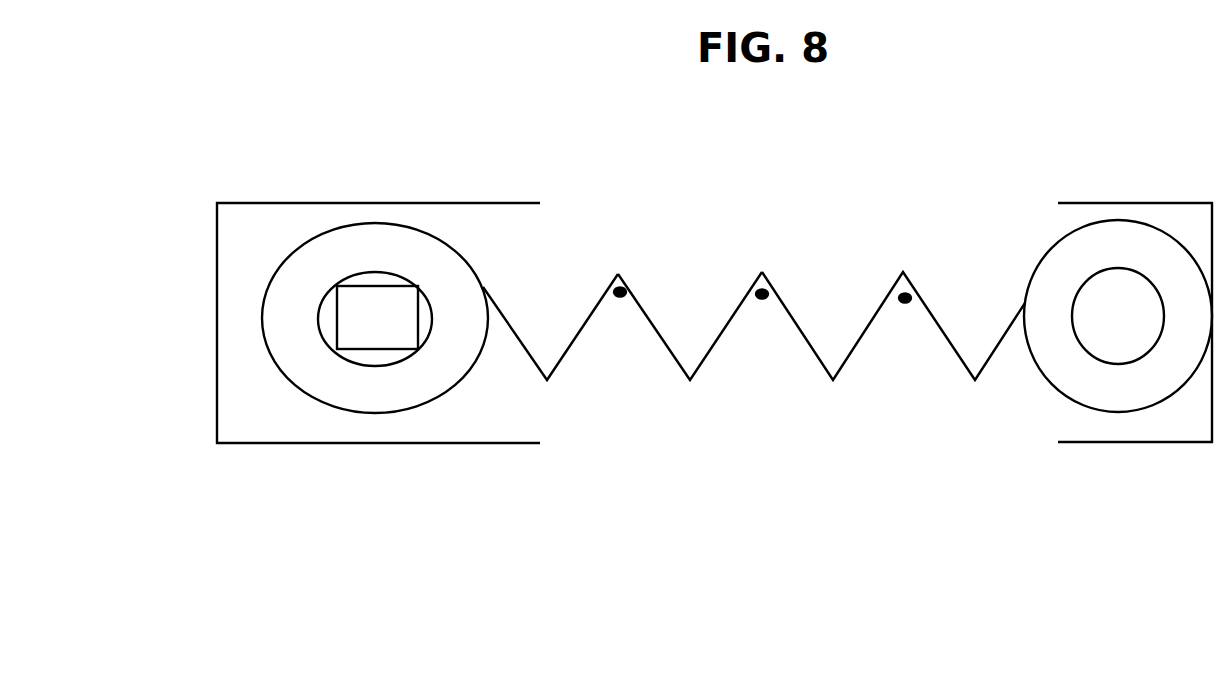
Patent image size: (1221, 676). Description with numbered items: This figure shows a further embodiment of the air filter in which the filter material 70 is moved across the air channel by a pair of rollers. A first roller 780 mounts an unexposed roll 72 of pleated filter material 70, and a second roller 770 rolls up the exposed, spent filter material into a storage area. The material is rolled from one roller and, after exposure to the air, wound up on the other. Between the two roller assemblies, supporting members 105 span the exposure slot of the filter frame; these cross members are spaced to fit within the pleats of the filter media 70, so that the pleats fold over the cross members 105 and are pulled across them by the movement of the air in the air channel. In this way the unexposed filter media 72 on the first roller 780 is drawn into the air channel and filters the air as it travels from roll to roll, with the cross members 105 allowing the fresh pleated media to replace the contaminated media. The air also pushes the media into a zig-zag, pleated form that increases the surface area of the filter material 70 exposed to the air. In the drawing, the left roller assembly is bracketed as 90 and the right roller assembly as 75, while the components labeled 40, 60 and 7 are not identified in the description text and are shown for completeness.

The first connector assembly 90 is at (220, 469).
The first roller 780 is at (333, 290).
The inner ring 40 is at (370, 277).
The insert 60 is at (348, 300).
The spring wire 7 is at (675, 212).
The filter material 70 is at (703, 297).
The supporting members 105 is at (905, 298).
The second connector assembly 75 is at (1213, 447).
The unexposed roll 72 is at (1127, 232).
The second roller 770 is at (1112, 300).